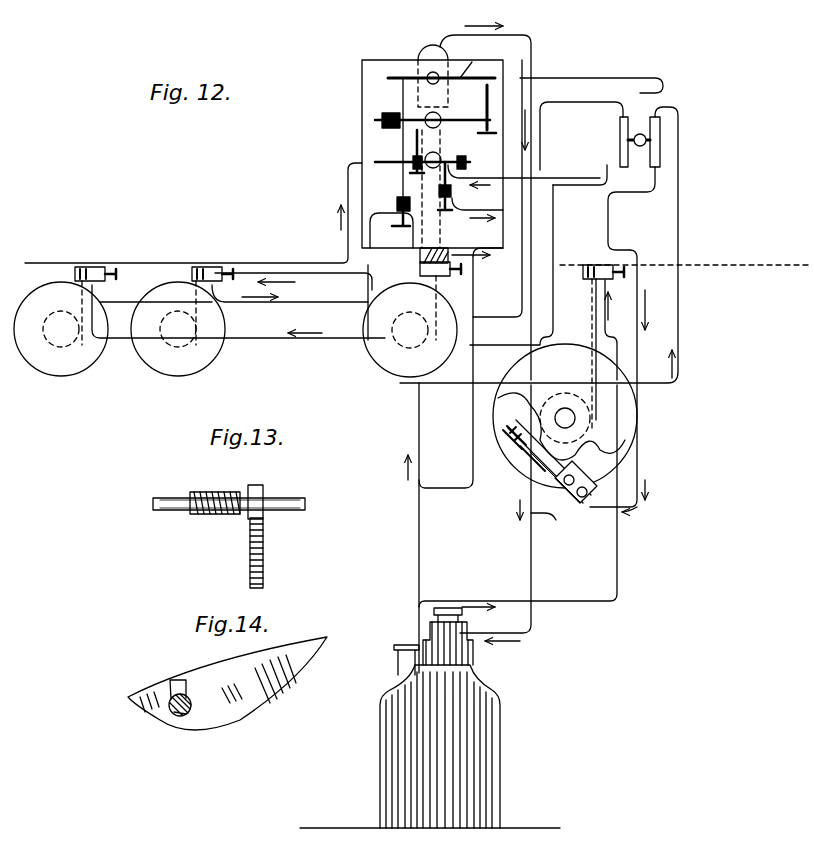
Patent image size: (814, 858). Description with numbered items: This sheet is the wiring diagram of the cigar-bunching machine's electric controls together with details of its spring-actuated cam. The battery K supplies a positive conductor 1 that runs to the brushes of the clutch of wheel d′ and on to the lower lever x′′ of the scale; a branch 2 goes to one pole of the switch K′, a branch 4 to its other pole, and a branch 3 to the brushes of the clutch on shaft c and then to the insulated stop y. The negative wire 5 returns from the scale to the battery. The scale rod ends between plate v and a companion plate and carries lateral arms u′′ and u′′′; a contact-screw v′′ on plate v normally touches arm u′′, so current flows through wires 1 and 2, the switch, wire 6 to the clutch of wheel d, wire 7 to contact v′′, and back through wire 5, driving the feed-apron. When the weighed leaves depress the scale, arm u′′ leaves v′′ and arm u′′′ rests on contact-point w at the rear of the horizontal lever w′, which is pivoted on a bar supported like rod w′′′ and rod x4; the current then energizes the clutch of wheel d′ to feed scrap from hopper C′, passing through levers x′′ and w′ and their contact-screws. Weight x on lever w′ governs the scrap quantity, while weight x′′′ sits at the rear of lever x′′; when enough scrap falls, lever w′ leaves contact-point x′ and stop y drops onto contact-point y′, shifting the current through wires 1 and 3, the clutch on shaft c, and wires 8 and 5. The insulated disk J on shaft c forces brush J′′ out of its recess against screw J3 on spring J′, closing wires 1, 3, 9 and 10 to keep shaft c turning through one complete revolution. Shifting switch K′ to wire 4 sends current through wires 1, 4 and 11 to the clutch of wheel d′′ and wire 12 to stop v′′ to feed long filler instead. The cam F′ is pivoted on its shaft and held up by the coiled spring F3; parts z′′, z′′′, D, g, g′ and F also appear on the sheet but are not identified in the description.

In FIG. 12, the positive conductor 1 is at (376, 439).
In FIG. 12, the branch wire 2 is at (547, 251).
In FIG. 12, the branch wire 3 is at (524, 334).
In FIG. 12, the branch wire 4 is at (507, 325).
In FIG. 12, the negative wire 5 is at (492, 333).
In FIG. 12, the wire 6 is at (373, 263).
In FIG. 12, the wire 7 is at (236, 300).
In FIG. 12, the wire 8 is at (484, 205).
In FIG. 12, the wire 9 is at (450, 282).
In FIG. 12, the wire 10 is at (578, 516).
In FIG. 12, the wire 11 is at (581, 136).
In FIG. 12, the wire 12 is at (423, 255).
In FIG. 12, the vertical plate v is at (360, 106).
In FIG. 12, the contact-screw v′′ is at (401, 100).
In FIG. 12, the lateral arm u′′ is at (386, 78).
In FIG. 12, the lateral arm u′′′ is at (473, 60).
In FIG. 12, the contact-point w is at (484, 93).
In FIG. 12, the horizontal lever w′ is at (432, 125).
In FIG. 12, the rod w′′′ is at (441, 118).
In FIG. 12, the adjustable weight x is at (395, 158).
In FIG. 12, the contact-point x′ is at (428, 74).
In FIG. 12, the short lever x′′ is at (413, 148).
In FIG. 12, the adjustable weight x′′′ is at (475, 176).
In FIG. 12, the rod x4 is at (428, 168).
In FIG. 12, the insulated stop y is at (460, 160).
In FIG. 12, the contact-point y′ is at (452, 195).
In FIG. 12, the cylinder head z′′ is at (428, 45).
In FIG. 12, the piston rod z′′′ is at (478, 257).
In FIG. 12, the pipe D is at (591, 75).
In FIG. 12, the battery K is at (430, 718).
In FIG. 12, the switch K′ is at (658, 140).
In FIG. 12, the brake cylinder rod g is at (97, 284).
In FIG. 12, the brake cylinder g′ is at (92, 266).
In FIG. 12, the sprocket-wheel d is at (61, 329).
In FIG. 12, the sprocket-wheel d′ is at (178, 329).
In FIG. 12, the sprocket-wheel d′′ is at (410, 321).
In FIG. 12, the shaft c is at (565, 412).
In FIG. 12, the hopper C′ is at (638, 416).
In FIG. 12, the insulated disk J is at (560, 447).
In FIG. 12, the spring J′ is at (528, 455).
In FIG. 12, the spring or brush J′′ is at (540, 470).
In FIG. 12, the contact-screw J3 is at (508, 440).
In FIG. 13, the brake shoe F is at (290, 498).
In FIG. 14, the brake shoe F is at (165, 715).
In FIG. 13, the cam F′ is at (266, 490).
In FIG. 14, the cam F′ is at (240, 692).
In FIG. 13, the spring F3 is at (216, 492).
In FIG. 14, the spring F3 is at (190, 704).